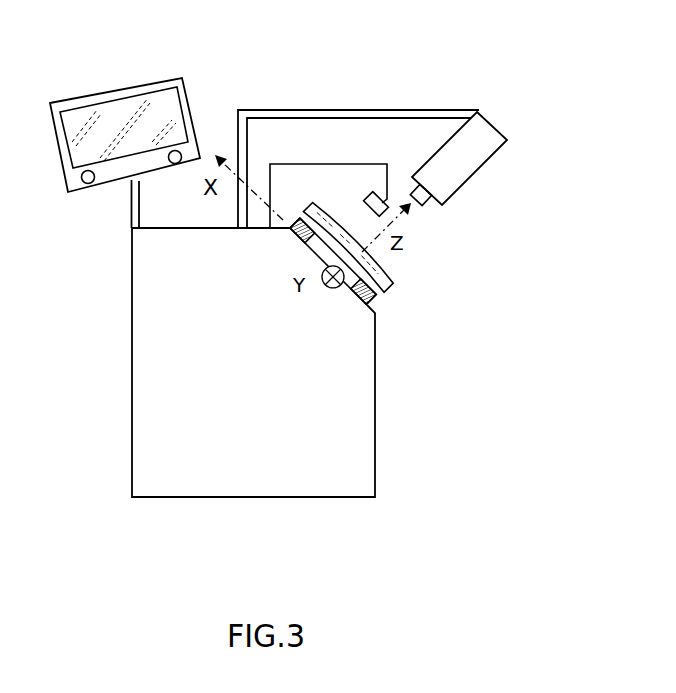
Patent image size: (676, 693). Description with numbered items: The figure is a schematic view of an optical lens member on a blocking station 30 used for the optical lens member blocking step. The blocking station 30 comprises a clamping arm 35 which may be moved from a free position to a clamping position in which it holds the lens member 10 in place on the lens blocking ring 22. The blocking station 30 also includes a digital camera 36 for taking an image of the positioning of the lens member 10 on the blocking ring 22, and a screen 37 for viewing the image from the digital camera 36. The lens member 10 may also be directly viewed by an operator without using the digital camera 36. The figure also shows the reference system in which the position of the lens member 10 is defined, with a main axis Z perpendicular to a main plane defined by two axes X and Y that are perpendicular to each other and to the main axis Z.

The lens member 10 is at (390, 277).
The lens blocking ring 22 is at (377, 303).
The blocking station 30 is at (293, 84).
The clamping arm 35 is at (362, 164).
The digital camera 36 is at (480, 152).
The screen 37 is at (112, 117).